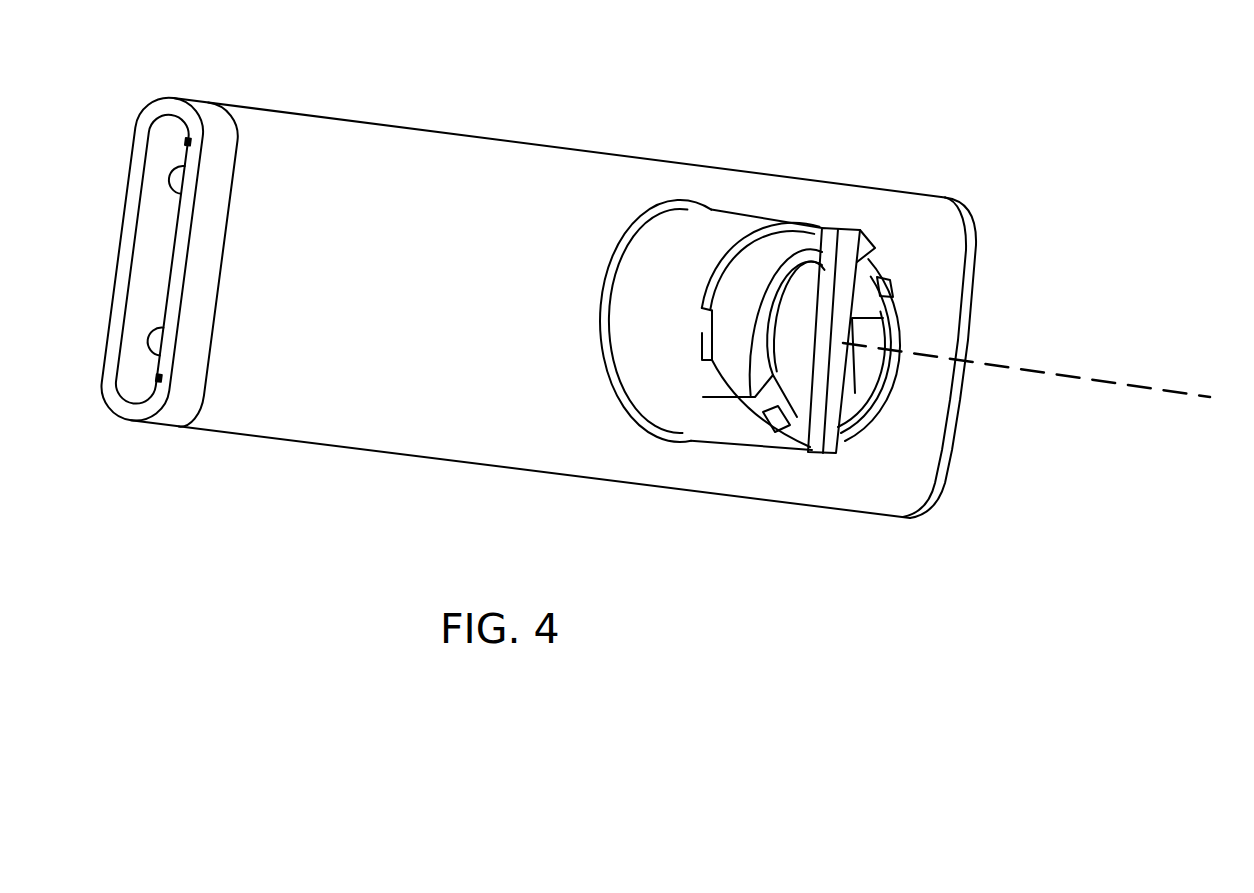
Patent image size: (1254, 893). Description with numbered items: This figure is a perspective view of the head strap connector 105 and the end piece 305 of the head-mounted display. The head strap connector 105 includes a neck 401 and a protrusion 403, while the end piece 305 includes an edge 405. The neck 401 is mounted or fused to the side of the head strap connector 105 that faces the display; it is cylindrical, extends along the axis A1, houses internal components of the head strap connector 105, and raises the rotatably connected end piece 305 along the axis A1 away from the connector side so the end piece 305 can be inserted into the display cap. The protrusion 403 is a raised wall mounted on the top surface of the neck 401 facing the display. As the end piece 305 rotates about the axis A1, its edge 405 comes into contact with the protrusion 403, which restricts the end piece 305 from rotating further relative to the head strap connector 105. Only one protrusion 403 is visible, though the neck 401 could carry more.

The head strap connector 105 is at (378, 298).
The neck 401 is at (713, 240).
The end piece 305 is at (893, 297).
The protrusion 403 is at (708, 333).
The edge 405 is at (702, 358).
The axis A1 is at (1080, 377).